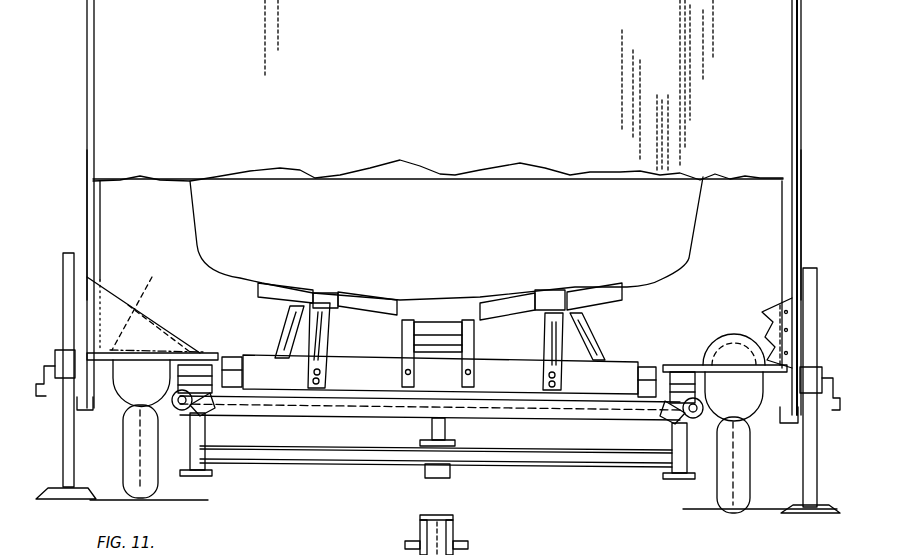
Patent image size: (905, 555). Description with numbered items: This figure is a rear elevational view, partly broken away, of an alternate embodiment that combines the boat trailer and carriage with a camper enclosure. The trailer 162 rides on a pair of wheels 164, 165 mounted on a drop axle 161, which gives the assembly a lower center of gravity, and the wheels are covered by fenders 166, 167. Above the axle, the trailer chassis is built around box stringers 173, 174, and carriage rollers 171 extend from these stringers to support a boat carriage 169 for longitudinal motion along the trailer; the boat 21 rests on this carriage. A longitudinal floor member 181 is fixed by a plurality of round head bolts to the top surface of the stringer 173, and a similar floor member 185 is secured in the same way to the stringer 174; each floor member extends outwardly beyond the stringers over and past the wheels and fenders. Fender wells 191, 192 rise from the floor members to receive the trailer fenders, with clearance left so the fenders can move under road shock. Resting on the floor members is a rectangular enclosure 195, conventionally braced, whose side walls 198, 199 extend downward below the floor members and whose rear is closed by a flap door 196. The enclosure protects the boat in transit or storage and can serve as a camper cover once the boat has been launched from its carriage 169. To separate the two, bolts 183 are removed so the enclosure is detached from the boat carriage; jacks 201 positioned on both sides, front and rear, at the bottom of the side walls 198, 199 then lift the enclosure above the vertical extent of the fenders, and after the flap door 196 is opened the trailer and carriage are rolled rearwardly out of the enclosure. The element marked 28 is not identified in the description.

The boat 21 is at (207, 228).
The post 28 is at (455, 532).
The drop axle 161 is at (585, 467).
The trailer 162 is at (733, 495).
The wheel 164 is at (740, 458).
The wheel 165 is at (130, 452).
The fender 166 is at (750, 403).
The fender 167 is at (128, 388).
The boat carriage 169 is at (623, 358).
The carriage rollers 171 is at (233, 357).
The trailer chassis box stringer 173 is at (660, 403).
The trailer chassis box stringer 174 is at (202, 400).
The longitudinal floor member 181 is at (738, 358).
The bolts 183 is at (687, 372).
The floor member 185 is at (135, 353).
The fender well 191 is at (750, 355).
The fender well 192 is at (152, 268).
The rectangular enclosure 195 is at (80, 14).
The rear flap door 196 is at (767, 85).
The side wall 198 is at (87, 210).
The side wall 199 is at (800, 205).
The jacks 201 is at (68, 483).